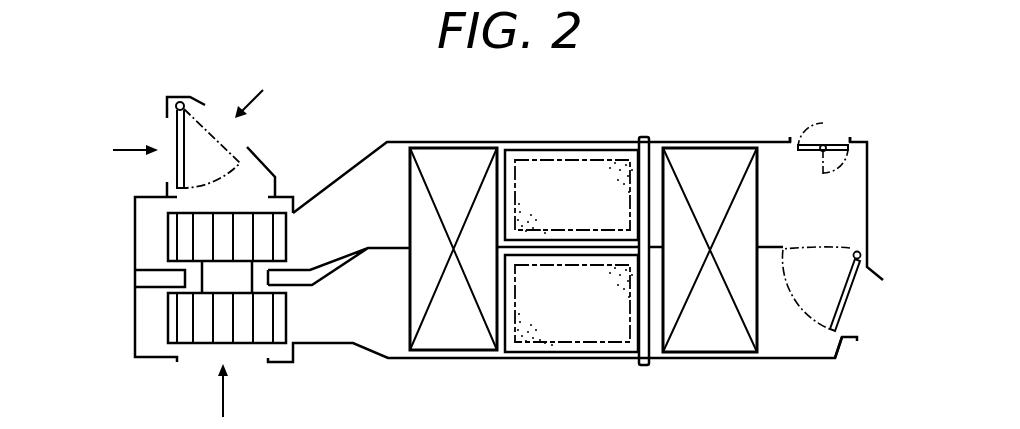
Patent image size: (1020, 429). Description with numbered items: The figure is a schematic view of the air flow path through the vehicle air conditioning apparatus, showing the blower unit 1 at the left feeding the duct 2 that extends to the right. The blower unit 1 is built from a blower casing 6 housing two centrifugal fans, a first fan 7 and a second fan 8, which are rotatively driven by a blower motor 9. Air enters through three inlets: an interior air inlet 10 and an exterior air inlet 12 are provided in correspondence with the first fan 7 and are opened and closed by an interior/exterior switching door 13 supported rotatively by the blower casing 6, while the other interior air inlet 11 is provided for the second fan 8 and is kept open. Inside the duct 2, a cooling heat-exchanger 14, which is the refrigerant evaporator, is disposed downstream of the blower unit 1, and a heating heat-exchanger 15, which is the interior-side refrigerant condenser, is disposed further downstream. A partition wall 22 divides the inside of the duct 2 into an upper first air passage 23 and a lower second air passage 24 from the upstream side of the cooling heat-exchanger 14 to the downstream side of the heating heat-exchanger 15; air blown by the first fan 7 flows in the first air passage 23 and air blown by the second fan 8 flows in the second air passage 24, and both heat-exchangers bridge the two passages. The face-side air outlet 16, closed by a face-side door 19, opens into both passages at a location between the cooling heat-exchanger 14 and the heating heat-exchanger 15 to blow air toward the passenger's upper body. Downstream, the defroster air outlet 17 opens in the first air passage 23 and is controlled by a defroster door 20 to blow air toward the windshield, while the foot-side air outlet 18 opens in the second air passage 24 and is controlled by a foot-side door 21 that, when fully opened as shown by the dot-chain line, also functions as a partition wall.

The blower unit 1 is at (142, 365).
The duct 2 is at (512, 362).
The blower casing 6 is at (136, 257).
The first fan 7 is at (168, 237).
The second fan 8 is at (168, 313).
The blower motor 9 is at (214, 271).
The interior air inlet 10 is at (168, 135).
The interior air inlet 11 is at (188, 358).
The exterior air inlet 12 is at (233, 143).
The interior/exterior switching door 13 is at (177, 165).
The cooling heat-exchanger 14 is at (457, 355).
The heating heat-exchanger 15 is at (698, 355).
The face-side air outlet 16 is at (589, 212).
The defroster air outlet 17 is at (837, 138).
The foot-side air outlet 18 is at (855, 320).
The face-side door 19 is at (572, 353).
The defroster door 20 is at (815, 145).
The foot-side door 21 is at (850, 290).
The partition wall 22 is at (393, 249).
The first air passage 23 is at (383, 223).
The second air passage 24 is at (383, 312).